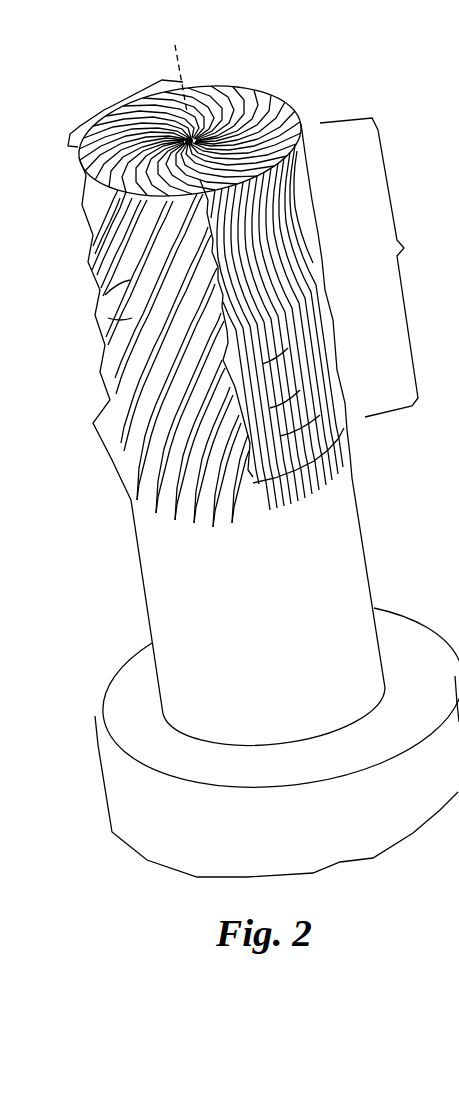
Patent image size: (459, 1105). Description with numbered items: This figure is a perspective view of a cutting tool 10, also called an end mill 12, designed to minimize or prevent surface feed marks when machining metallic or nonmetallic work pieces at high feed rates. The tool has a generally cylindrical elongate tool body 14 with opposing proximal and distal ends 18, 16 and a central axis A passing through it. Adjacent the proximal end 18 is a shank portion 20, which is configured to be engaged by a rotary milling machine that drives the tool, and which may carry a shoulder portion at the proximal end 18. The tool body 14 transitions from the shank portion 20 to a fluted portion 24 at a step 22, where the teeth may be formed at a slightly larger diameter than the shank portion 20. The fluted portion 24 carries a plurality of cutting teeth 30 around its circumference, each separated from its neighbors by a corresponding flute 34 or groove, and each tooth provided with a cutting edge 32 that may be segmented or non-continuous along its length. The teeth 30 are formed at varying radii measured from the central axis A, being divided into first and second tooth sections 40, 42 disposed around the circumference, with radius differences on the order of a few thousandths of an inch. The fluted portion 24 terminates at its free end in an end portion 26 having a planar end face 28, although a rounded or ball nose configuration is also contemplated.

The cutting tool 10 is at (229, 383).
The end mill 12 is at (229, 385).
The tool body 14 is at (230, 303).
The distal end 16 is at (65, 158).
The proximal end 18 is at (409, 598).
The shank portion 20 is at (348, 522).
The step 22 is at (340, 478).
The fluted portion 24 is at (320, 278).
The end portion 26 is at (283, 100).
The planar end face 28 is at (203, 92).
The cutting teeth 30 is at (150, 467).
The cutting edges 32 is at (320, 238).
The flutes 34 is at (127, 317).
The first tooth sections 40 is at (110, 237).
The second tooth section 42 is at (50, 363).
The central axis A is at (176, 62).